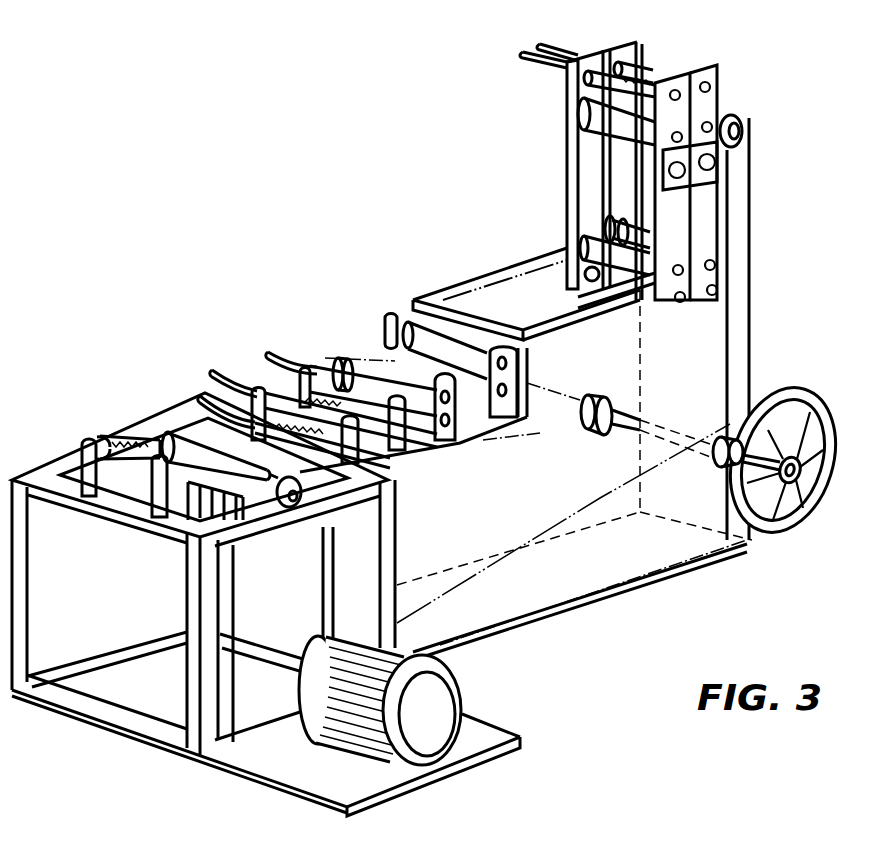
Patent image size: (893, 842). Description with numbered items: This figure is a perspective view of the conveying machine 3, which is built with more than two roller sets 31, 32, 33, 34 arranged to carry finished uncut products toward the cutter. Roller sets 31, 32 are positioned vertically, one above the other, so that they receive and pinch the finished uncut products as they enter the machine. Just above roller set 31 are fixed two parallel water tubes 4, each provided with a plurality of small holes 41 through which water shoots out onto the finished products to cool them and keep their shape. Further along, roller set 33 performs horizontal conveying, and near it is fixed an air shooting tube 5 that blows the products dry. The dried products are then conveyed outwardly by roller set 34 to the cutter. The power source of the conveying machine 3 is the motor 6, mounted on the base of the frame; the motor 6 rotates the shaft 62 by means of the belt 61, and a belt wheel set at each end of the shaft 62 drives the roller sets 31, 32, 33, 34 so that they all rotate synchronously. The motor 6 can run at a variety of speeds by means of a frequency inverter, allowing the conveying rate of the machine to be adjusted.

The conveying machine 3 is at (628, 567).
The water tubes 4 is at (660, 75).
The small holes 41 is at (655, 72).
The air shooting tube 5 is at (317, 366).
The motor 6 is at (443, 697).
The roller set 31 is at (585, 114).
The roller set 32 is at (578, 240).
The roller set 33 is at (410, 312).
The roller set 34 is at (220, 483).
The belt 61 is at (580, 613).
The shaft 62 is at (663, 420).